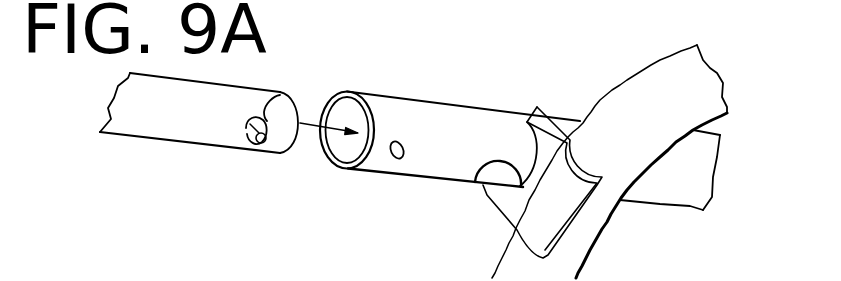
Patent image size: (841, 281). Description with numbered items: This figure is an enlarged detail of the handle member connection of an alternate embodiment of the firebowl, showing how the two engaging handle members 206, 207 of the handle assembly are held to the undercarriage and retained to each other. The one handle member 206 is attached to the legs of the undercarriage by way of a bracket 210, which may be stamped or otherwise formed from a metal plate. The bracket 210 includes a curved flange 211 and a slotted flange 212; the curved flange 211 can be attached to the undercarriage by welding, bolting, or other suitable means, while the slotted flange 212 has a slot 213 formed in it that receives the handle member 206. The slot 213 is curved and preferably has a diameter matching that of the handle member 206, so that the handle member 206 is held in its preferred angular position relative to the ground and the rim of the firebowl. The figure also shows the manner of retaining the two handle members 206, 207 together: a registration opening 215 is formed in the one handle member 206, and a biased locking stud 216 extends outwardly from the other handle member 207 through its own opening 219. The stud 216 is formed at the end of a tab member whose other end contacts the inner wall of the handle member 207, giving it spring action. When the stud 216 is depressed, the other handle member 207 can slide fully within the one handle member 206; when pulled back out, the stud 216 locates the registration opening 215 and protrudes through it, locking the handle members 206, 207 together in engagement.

The handle member 206 is at (440, 103).
The handle member 207 is at (183, 120).
The bracket 210 is at (565, 188).
The curved flange 211 is at (552, 215).
The slotted flange 212 is at (545, 133).
The slot 213 is at (480, 181).
The registration opening 215 is at (397, 160).
The locking stud 216 is at (262, 142).
The opening 219 is at (279, 95).